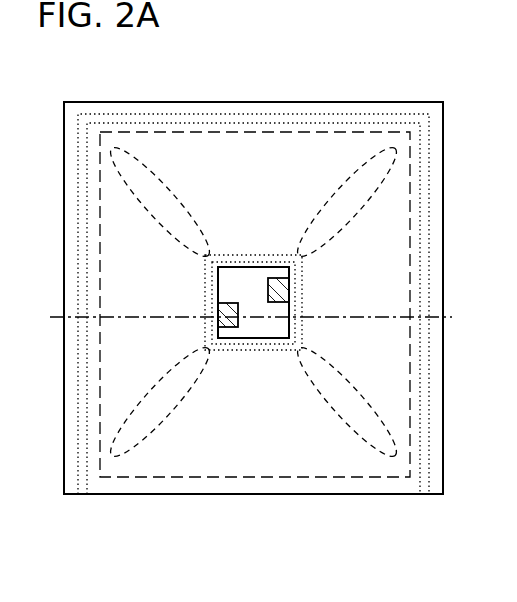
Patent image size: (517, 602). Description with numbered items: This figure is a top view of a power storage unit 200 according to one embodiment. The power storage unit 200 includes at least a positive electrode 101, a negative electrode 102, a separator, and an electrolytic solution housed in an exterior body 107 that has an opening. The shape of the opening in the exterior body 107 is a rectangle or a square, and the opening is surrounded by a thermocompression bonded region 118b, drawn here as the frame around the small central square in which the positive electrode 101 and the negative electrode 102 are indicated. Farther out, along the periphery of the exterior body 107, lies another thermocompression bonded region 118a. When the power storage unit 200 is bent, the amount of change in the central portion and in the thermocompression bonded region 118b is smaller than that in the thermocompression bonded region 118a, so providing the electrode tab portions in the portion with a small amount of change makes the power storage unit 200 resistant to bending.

The power storage unit 200 is at (106, 82).
The exterior body 107 is at (212, 108).
The thermocompression bonded region 118a is at (423, 478).
The thermocompression bonded region 118b is at (300, 327).
The negative electrode 102 is at (270, 294).
The positive electrode 101 is at (238, 322).